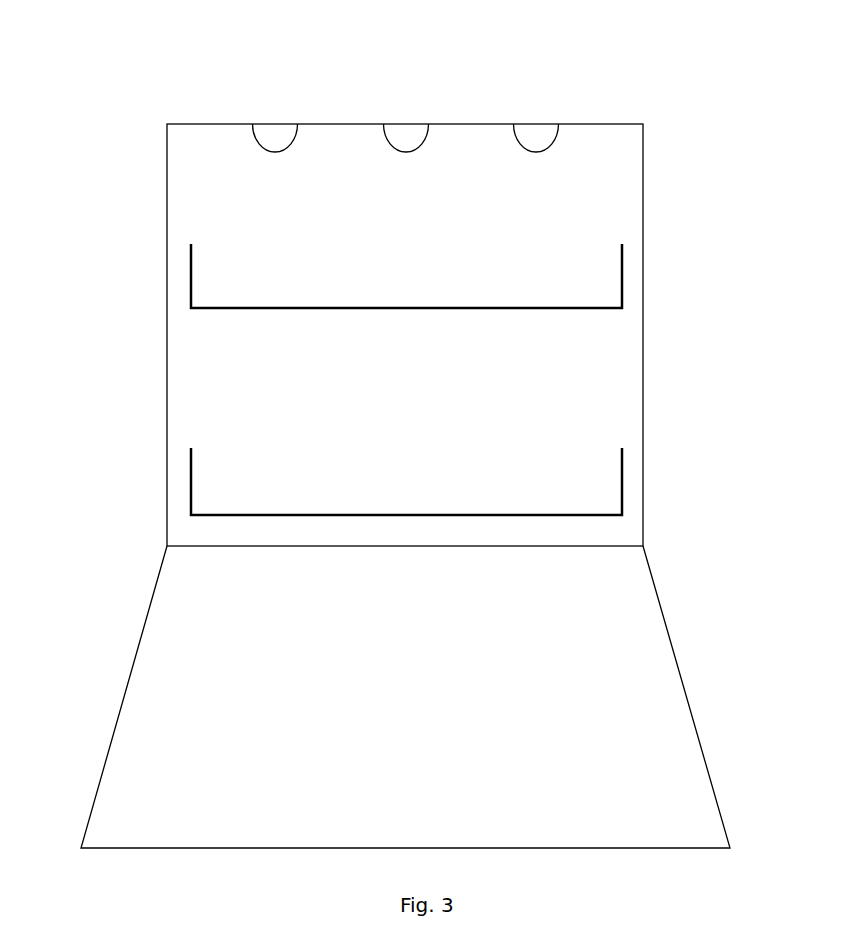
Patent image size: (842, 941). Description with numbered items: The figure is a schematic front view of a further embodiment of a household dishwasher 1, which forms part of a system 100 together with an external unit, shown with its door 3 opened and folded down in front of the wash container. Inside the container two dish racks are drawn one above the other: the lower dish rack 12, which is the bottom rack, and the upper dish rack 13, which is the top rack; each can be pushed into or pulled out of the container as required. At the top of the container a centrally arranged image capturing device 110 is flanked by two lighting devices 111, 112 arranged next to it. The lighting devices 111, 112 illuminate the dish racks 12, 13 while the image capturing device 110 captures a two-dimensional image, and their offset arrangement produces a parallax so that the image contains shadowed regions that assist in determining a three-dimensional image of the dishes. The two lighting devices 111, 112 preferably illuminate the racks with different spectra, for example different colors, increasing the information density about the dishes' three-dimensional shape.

The household dishwasher 1 is at (187, 121).
The system 100 is at (116, 259).
The image capturing device 110 is at (405, 124).
The lighting device 111 is at (275, 124).
The lighting device 112 is at (535, 124).
The dish rack 12 is at (622, 288).
The dish rack 13 is at (622, 490).
The door 3 is at (668, 634).